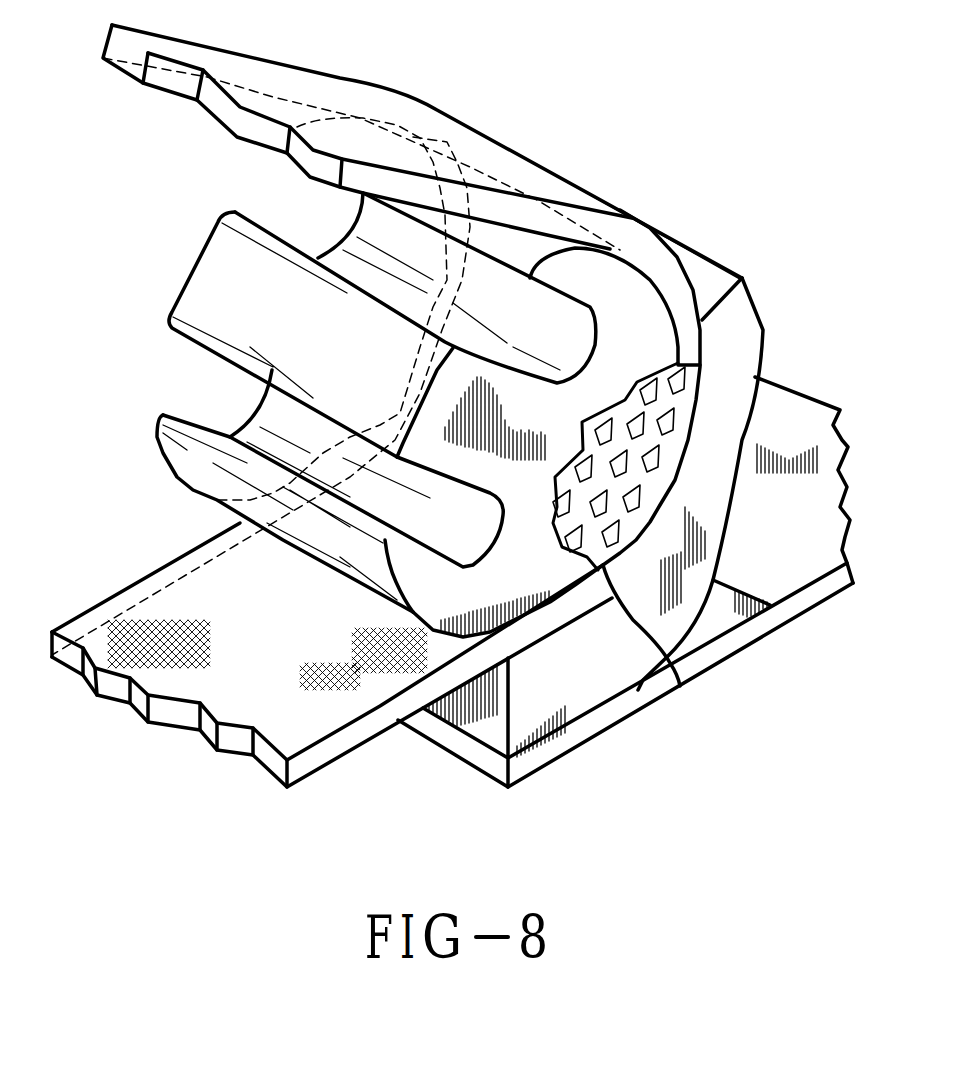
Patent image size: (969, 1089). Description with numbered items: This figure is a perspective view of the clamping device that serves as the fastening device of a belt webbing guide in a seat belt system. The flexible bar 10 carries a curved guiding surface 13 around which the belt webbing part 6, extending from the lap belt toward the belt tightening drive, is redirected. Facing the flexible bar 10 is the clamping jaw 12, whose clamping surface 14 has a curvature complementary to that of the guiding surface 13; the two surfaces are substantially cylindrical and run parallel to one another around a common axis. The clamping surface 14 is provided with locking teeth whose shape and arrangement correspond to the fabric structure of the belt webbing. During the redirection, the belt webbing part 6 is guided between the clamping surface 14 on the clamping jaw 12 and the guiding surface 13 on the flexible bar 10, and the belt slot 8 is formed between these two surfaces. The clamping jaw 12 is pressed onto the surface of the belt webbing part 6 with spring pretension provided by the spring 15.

The belt webbing part 6 is at (213, 103).
The belt slot 8 is at (610, 600).
The flexible bar 10 is at (233, 283).
The clamping jaw 12 is at (567, 677).
The guiding surface 13 is at (680, 347).
The clamping surface 14 is at (637, 453).
The spring 15 is at (757, 625).